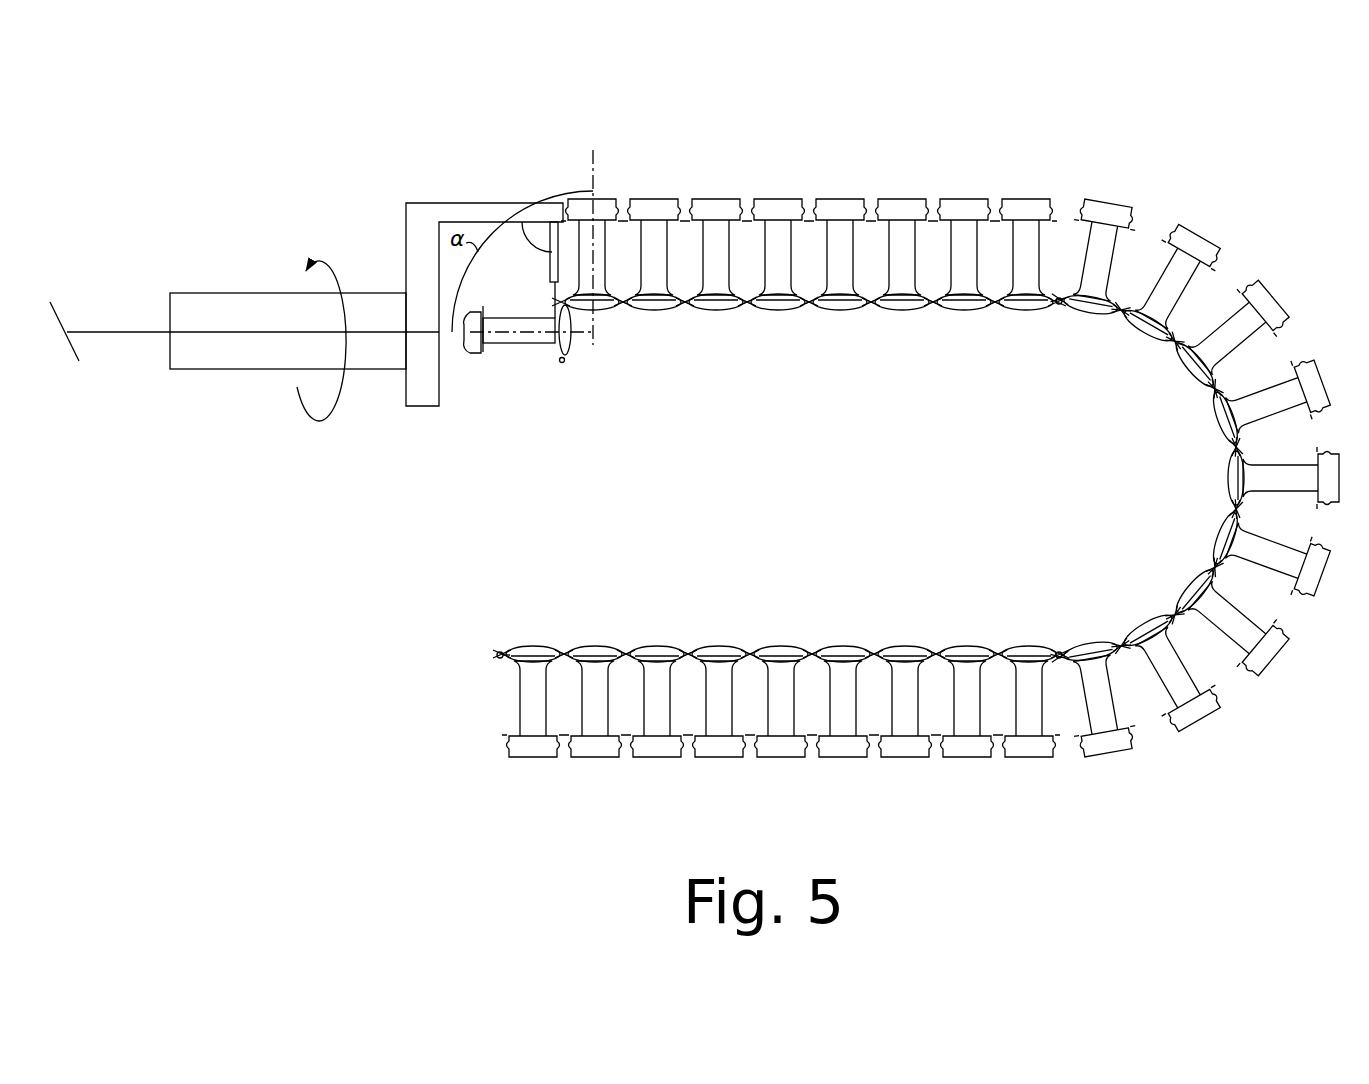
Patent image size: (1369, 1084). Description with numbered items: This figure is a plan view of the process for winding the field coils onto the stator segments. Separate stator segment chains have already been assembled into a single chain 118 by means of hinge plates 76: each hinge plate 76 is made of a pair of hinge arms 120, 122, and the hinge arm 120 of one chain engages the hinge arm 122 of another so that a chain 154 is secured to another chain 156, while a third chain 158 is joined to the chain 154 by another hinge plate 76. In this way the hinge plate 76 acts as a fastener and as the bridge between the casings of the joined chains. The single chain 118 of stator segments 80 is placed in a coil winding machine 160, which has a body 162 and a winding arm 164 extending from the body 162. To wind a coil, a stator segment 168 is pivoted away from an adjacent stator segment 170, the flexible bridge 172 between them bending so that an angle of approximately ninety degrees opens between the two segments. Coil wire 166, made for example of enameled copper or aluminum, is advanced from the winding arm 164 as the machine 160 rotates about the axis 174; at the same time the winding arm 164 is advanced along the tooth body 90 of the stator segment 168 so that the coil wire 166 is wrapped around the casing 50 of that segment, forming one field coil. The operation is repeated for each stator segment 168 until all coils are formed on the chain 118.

The casing 50 is at (553, 344).
The hinge plate 76 is at (1055, 315).
The stator segment 80 is at (978, 178).
The tooth body 90 is at (494, 341).
The single chain 118 is at (870, 419).
The hinge arm 120 is at (602, 344).
The hinge arm 122 is at (870, 441).
The chain 154 is at (813, 267).
The chain 156 is at (1190, 440).
The third chain 158 is at (793, 583).
The coil winding machine 160 is at (293, 432).
The body 162 is at (373, 352).
The winding arm 164 is at (470, 208).
The coil wire 166 is at (553, 300).
The stator segment 168 is at (553, 347).
The stator segment 170 is at (597, 232).
The flexible bridge 172 is at (570, 298).
The axis 174 is at (525, 337).